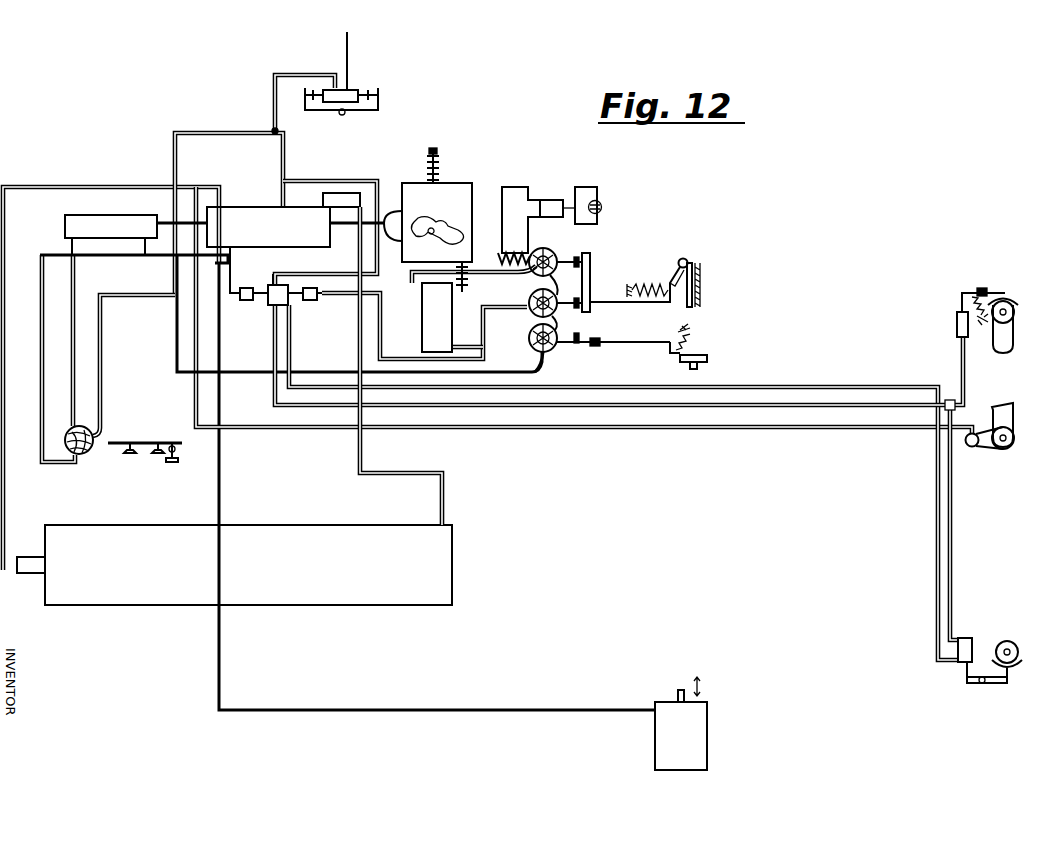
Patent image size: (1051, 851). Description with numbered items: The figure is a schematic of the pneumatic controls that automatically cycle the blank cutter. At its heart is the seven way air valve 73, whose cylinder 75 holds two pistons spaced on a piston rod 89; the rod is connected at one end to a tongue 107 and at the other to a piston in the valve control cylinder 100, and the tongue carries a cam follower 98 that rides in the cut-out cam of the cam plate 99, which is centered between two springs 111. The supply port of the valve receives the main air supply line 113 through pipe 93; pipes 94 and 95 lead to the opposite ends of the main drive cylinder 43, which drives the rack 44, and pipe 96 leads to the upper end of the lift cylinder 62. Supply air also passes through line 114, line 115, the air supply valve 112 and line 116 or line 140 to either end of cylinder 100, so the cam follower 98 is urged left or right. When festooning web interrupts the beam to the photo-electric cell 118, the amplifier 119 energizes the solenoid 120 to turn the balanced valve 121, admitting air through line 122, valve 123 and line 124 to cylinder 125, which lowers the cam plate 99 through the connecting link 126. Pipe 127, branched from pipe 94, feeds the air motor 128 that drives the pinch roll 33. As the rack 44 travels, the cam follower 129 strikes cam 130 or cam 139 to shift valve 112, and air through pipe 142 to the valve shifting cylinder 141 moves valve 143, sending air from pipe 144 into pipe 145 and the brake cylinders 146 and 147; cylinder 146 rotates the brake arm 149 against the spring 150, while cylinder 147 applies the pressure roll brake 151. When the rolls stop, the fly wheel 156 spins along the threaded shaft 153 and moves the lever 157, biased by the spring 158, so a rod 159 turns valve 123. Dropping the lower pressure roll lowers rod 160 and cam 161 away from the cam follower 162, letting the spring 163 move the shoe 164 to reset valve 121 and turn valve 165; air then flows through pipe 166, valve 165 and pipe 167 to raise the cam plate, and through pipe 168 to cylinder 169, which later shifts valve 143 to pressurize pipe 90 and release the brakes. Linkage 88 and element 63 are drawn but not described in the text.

The pinch roll 33 is at (1014, 412).
The main drive cylinder 43 is at (134, 528).
The rack 44 is at (172, 464).
The lift cylinder 62 is at (708, 730).
The control knob 63 is at (676, 694).
The seven way air valve 73 is at (313, 192).
The cylinder 75 is at (306, 248).
The connecting rod 88 is at (357, 212).
The piston rod 89 is at (210, 226).
The pipe 90 is at (846, 386).
The pipe 93 is at (284, 198).
The pipe 94 is at (112, 186).
The pipe 95 is at (352, 193).
The pipe 96 is at (388, 708).
The cam follower 98 is at (437, 220).
The cam plate 99 is at (466, 186).
The valve control cylinder 100 is at (110, 220).
The tongue 107 is at (390, 212).
The springs 111 is at (440, 172).
The air supply valve 112 is at (380, 98).
The main air supply line 113 is at (273, 100).
The line 114 is at (178, 157).
The line 115 is at (104, 320).
The line 116 is at (76, 366).
The photo-electric cell 118 is at (602, 208).
The amplifier 119 is at (552, 200).
The solenoid 120 is at (506, 262).
The balanced valve 121 is at (549, 258).
The line 122 is at (173, 366).
The valve 123 is at (548, 352).
The line 124 is at (582, 340).
The cylinder 125 is at (424, 312).
The connecting link 126 is at (432, 270).
The pipe 127 is at (242, 428).
The air motor 128 is at (975, 448).
The cam follower 129 is at (186, 452).
The cam 130 is at (158, 456).
The cam 139 is at (130, 455).
The line 140 is at (44, 400).
The valve shifting cylinder 141 is at (246, 302).
The pipe 142 is at (158, 257).
The valve 143 is at (290, 306).
The pipe 144 is at (340, 178).
The pipe 145 is at (882, 398).
The cylinder 146 is at (956, 325).
The cylinder 147 is at (970, 638).
The brake arm 149 is at (974, 288).
The spring 150 is at (960, 300).
The pressure roll brake 151 is at (1010, 684).
The threaded shaft 153 is at (700, 366).
The fly wheel 156 is at (710, 356).
The lever 157 is at (694, 350).
The spring 158 is at (680, 334).
The rod 159 is at (628, 348).
The rod 160 is at (702, 300).
The cam 161 is at (700, 284).
The cam follower 162 is at (684, 260).
The spring 163 is at (648, 288).
The shoe 164 is at (592, 272).
The valve 165 is at (526, 312).
The pipe 166 is at (527, 342).
The pipe 167 is at (536, 306).
The pipe 168 is at (420, 350).
The cylinder 169 is at (316, 302).